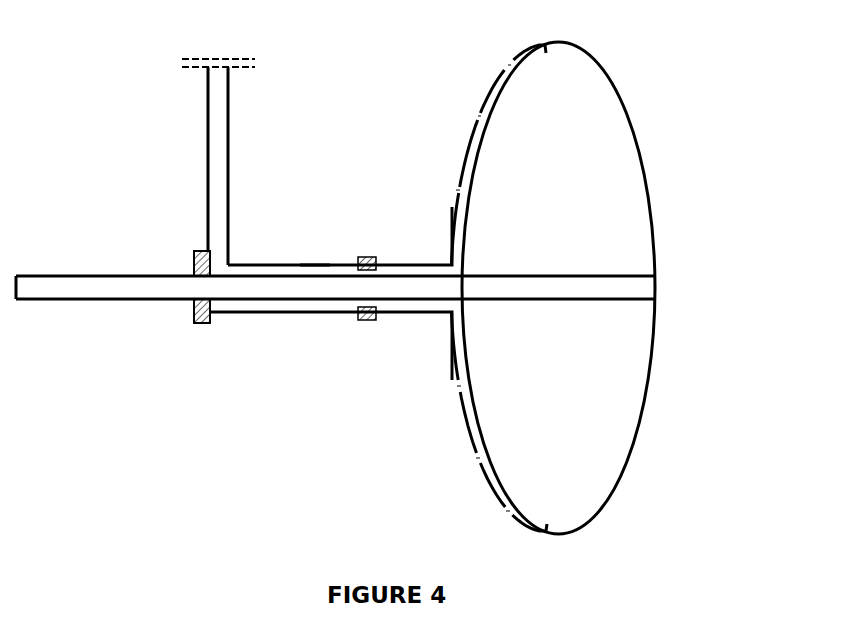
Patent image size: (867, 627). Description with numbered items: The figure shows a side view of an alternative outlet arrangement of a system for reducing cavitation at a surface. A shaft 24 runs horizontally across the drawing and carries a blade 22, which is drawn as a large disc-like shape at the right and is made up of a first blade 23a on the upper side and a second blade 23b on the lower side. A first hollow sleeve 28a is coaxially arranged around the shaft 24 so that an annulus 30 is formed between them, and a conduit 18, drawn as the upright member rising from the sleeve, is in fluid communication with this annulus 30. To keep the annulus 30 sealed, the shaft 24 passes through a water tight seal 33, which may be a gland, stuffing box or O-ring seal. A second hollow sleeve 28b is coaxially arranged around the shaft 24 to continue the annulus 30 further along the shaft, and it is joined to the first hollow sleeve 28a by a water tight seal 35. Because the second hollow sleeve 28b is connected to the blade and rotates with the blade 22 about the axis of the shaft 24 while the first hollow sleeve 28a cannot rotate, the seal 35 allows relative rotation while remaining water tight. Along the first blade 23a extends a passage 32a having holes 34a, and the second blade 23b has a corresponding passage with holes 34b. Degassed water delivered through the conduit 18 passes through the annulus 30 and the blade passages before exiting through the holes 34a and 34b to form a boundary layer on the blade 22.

The conduit 18 is at (205, 168).
The blade 22 is at (670, 203).
The first blade 23a is at (577, 145).
The second blade 23b is at (587, 437).
The shaft 24 is at (100, 302).
The first hollow sleeve 28a is at (256, 262).
The second hollow sleeve 28b is at (415, 262).
The annulus 30 is at (302, 262).
The passage 32a is at (456, 222).
The water tight seal 33 is at (196, 325).
The holes 34a is at (505, 62).
The holes 34b is at (503, 517).
The water tight seal 35 is at (365, 255).